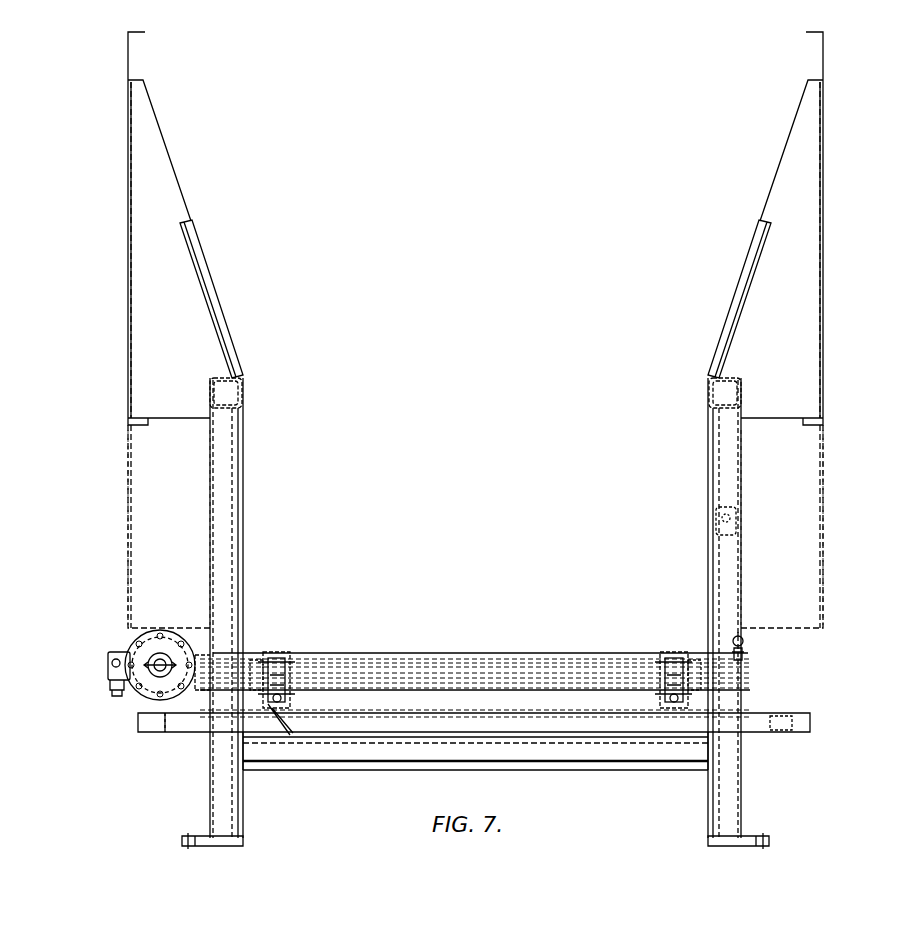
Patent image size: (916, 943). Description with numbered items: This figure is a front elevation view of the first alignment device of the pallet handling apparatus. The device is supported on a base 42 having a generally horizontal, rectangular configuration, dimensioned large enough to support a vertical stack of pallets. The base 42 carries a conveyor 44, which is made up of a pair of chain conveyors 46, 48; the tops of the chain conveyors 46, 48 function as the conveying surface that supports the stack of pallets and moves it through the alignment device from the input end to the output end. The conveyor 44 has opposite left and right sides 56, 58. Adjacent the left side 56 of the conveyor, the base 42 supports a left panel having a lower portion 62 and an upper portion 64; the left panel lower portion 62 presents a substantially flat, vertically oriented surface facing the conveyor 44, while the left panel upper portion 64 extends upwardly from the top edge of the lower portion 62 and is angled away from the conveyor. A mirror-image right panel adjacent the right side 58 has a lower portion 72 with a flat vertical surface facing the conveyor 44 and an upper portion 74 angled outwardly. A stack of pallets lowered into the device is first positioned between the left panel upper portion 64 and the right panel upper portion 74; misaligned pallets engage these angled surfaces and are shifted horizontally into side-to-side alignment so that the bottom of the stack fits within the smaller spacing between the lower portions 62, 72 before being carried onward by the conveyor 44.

The base 42 is at (742, 580).
The conveyor 44 is at (281, 652).
The chain conveyor 46 is at (281, 656).
The chain conveyor 48 is at (674, 659).
The left side of the conveyor 56 is at (268, 650).
The right side of the conveyor 58 is at (683, 652).
The left panel lower portion 62 is at (240, 492).
The left panel upper portion 64 is at (216, 290).
The right panel lower portion 72 is at (712, 477).
The right panel upper portion 74 is at (735, 290).